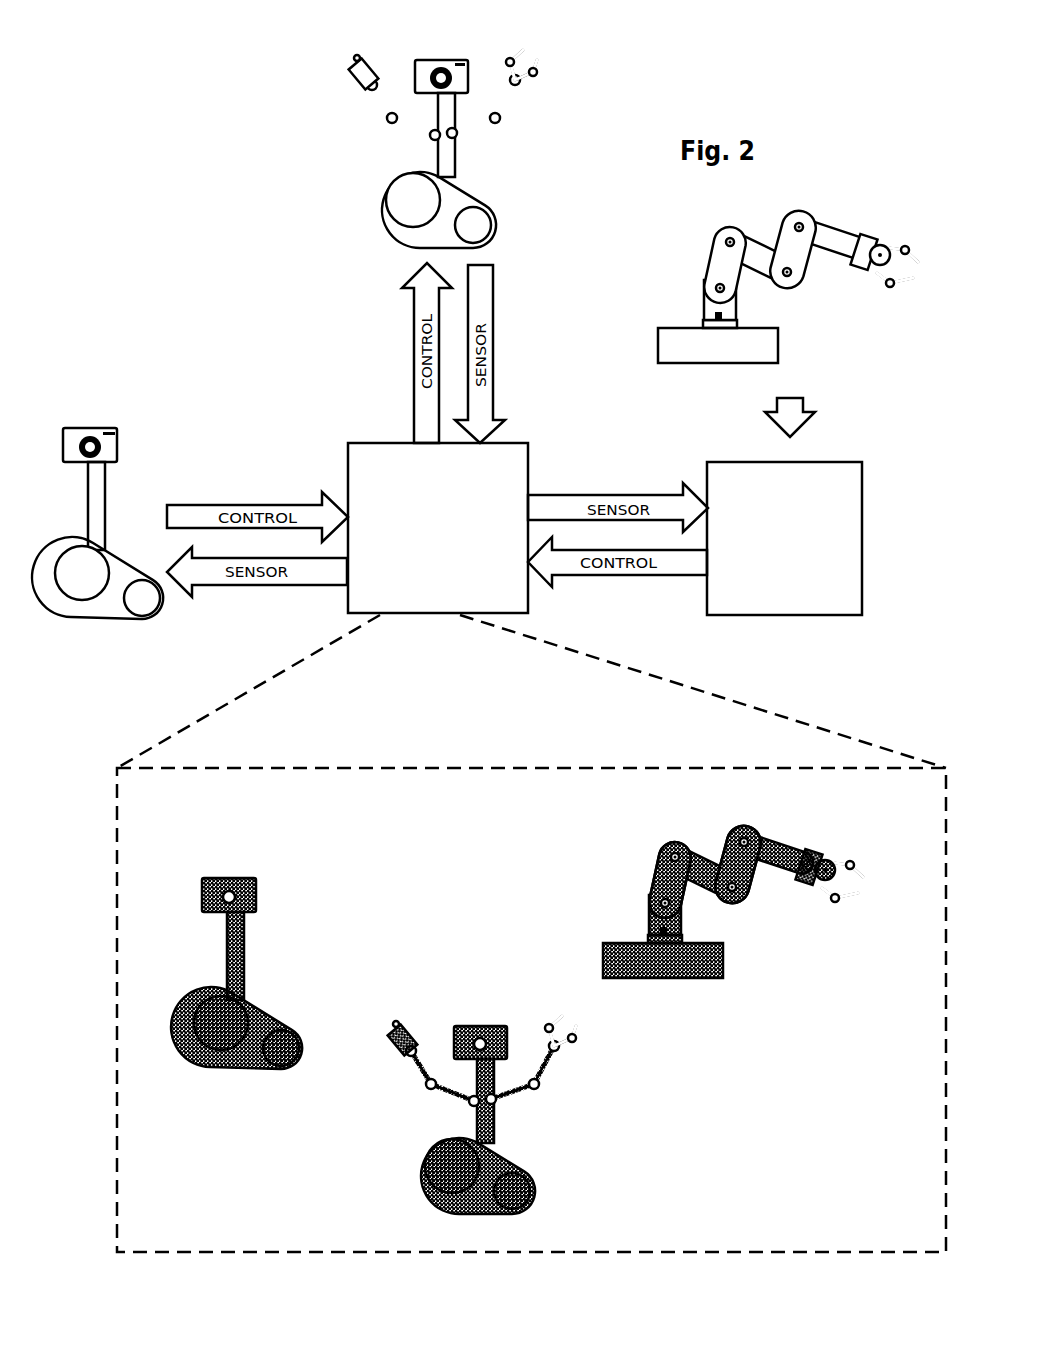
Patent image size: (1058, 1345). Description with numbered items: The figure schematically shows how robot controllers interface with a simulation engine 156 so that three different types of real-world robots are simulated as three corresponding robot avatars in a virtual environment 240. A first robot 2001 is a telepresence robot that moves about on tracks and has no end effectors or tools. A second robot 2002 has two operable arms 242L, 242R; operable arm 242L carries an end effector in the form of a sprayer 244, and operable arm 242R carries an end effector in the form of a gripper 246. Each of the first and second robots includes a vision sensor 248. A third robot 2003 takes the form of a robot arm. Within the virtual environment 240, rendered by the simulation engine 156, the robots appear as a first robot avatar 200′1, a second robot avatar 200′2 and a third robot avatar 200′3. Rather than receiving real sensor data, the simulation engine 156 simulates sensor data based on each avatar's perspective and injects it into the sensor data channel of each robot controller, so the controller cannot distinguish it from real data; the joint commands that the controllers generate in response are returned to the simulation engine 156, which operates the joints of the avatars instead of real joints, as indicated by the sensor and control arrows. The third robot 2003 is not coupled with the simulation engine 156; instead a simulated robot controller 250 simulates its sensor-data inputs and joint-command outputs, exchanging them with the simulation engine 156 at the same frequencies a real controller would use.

The simulation engine 156 is at (455, 570).
The simulated robot controller 250 is at (803, 594).
The virtual environment 240 is at (937, 1243).
The first robot 2001 is at (130, 520).
The second robot 2002 is at (458, 162).
The third robot 2003 is at (882, 206).
The first robot avatar 200′1 is at (268, 968).
The second robot avatar 200′2 is at (586, 1126).
The third robot avatar 200′3 is at (752, 984).
The operable arm 242R is at (385, 118).
The operable arm 242L is at (516, 100).
The sprayer 244 is at (349, 72).
The gripper 246 is at (540, 62).
The vision sensor 248 is at (73, 428).